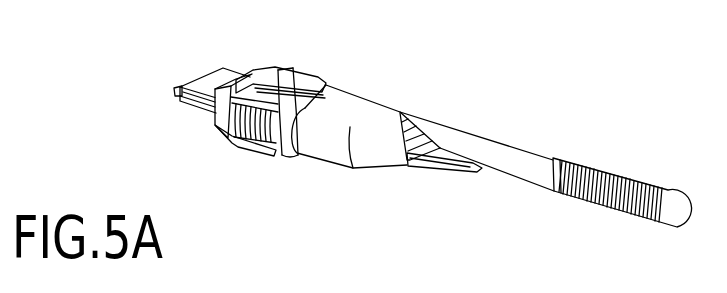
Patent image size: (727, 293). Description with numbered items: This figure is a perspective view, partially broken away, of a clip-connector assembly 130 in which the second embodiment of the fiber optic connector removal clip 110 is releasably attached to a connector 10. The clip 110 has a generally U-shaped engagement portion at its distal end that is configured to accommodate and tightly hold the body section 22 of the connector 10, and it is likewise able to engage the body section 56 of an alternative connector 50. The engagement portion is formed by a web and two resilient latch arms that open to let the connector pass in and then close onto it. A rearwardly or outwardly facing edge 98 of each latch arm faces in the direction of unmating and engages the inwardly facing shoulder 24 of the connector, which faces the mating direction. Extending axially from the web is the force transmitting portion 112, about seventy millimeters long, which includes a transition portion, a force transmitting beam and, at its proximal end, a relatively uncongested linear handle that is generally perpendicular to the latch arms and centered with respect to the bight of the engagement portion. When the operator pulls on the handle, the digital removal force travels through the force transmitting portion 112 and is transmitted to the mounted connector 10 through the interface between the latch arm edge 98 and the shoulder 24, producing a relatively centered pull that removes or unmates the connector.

The connector 10 is at (350, 160).
The connector 50 is at (327, 146).
The body section 22 is at (197, 124).
The body section 56 is at (236, 144).
The shoulder 24 is at (293, 70).
The outwardly facing edge 98 is at (278, 67).
The clip-connector assembly 130 is at (313, 54).
The connector removal clip 110 is at (458, 110).
The force transmitting portion 112 is at (507, 172).